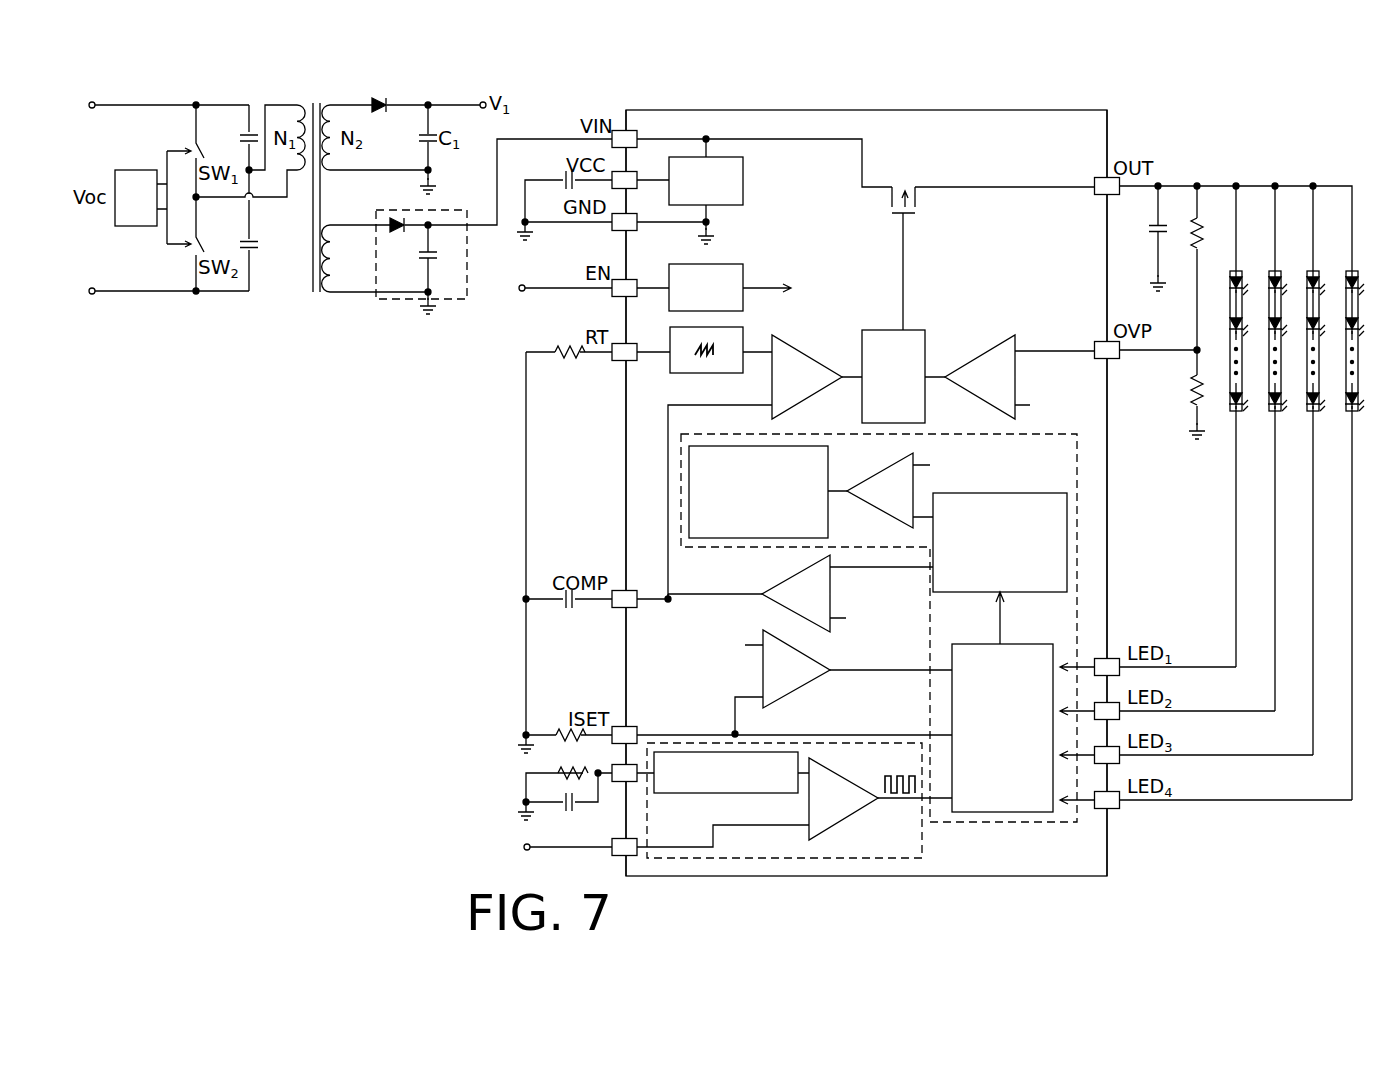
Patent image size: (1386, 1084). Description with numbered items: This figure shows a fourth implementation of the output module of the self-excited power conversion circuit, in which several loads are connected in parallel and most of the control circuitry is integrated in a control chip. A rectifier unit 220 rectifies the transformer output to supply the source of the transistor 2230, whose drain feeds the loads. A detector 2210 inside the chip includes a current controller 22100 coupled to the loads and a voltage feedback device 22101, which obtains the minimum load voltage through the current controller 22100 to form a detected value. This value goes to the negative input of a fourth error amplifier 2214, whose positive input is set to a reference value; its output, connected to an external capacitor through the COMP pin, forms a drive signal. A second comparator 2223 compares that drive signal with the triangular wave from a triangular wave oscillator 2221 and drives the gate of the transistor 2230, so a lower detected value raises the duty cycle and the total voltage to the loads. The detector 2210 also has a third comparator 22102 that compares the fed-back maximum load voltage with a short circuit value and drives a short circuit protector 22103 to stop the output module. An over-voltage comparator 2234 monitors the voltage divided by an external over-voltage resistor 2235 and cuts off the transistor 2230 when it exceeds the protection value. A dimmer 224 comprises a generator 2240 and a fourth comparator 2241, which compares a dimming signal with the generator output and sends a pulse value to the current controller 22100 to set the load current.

The rectifier unit 220 is at (388, 300).
The triangular wave oscillator 2221 is at (670, 365).
The second comparator 2223 is at (772, 392).
The short circuit protector 22103 is at (689, 492).
The fourth error amplifier 2214 is at (770, 610).
The transistor 2230 is at (922, 190).
The over-voltage comparator 2234 is at (1020, 335).
The over-voltage resistor 2235 is at (1200, 378).
The detector 2210 is at (818, 628).
The third comparator 22102 is at (917, 478).
The voltage feedback device 22101 is at (1070, 542).
The current controller 22100 is at (1030, 645).
The dimmer 224 is at (806, 831).
The generator 2240 is at (745, 793).
The fourth comparator 2241 is at (858, 810).